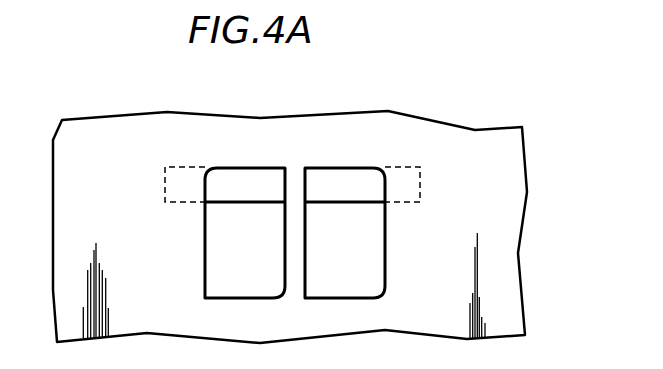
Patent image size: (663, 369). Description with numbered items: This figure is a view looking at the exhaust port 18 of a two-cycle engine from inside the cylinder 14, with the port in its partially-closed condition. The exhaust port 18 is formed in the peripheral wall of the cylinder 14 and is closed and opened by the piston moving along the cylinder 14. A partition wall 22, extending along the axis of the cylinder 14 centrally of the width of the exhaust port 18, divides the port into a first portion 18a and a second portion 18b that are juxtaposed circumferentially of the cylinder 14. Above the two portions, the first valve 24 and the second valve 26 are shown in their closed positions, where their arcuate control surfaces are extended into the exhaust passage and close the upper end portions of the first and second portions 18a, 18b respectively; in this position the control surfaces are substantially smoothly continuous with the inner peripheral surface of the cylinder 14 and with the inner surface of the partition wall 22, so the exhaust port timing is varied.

The cylinder 14 is at (483, 193).
The exhaust port 18 is at (292, 268).
The first portion of the exhaust port 18a is at (205, 250).
The second portion of the exhaust port 18b is at (385, 242).
The partition wall 22 is at (293, 260).
The first valve 24 is at (345, 178).
The second valve 26 is at (237, 180).